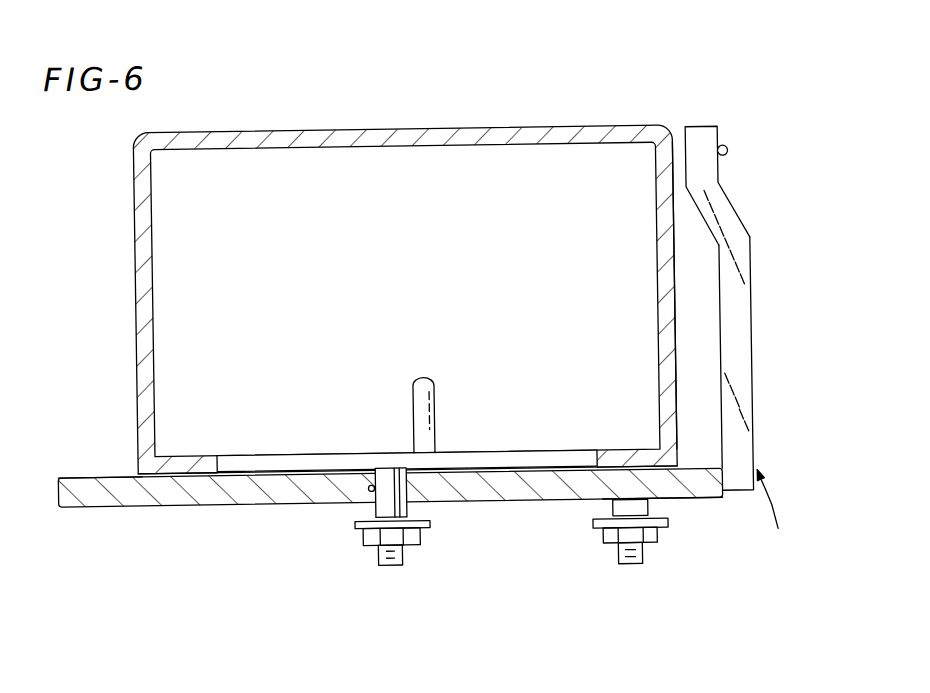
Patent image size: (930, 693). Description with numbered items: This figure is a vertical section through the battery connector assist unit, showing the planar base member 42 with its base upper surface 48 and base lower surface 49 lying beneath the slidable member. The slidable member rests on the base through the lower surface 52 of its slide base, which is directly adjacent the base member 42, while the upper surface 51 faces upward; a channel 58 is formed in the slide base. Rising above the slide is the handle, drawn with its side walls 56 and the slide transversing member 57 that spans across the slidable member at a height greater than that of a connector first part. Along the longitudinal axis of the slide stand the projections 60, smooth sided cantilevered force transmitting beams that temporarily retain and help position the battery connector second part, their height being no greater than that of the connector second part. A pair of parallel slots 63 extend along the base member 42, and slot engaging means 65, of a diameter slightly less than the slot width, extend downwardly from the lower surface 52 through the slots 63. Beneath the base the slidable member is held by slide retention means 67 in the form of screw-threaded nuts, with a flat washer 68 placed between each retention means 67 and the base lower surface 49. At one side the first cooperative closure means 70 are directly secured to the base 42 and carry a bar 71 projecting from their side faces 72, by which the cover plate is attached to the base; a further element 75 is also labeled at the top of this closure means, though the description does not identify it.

The base member 42 is at (399, 538).
The base upper surface 48 is at (655, 383).
The base lower surface 49 is at (664, 562).
The upper surface 51 is at (184, 427).
The lower surface 52 is at (93, 445).
The side walls 56 is at (694, 295).
The slide transversing member 57 is at (404, 264).
The channel 58 is at (406, 427).
The projections 60 is at (469, 396).
The slots 63 is at (474, 561).
The slot engaging means 65 is at (481, 526).
The slide retention means 67 is at (511, 584).
The flat washer 68 is at (512, 562).
The first cooperative closure means 70 is at (780, 513).
The bar 71 is at (679, 153).
The side faces 72 is at (759, 340).
The pivot pin 75 is at (694, 87).